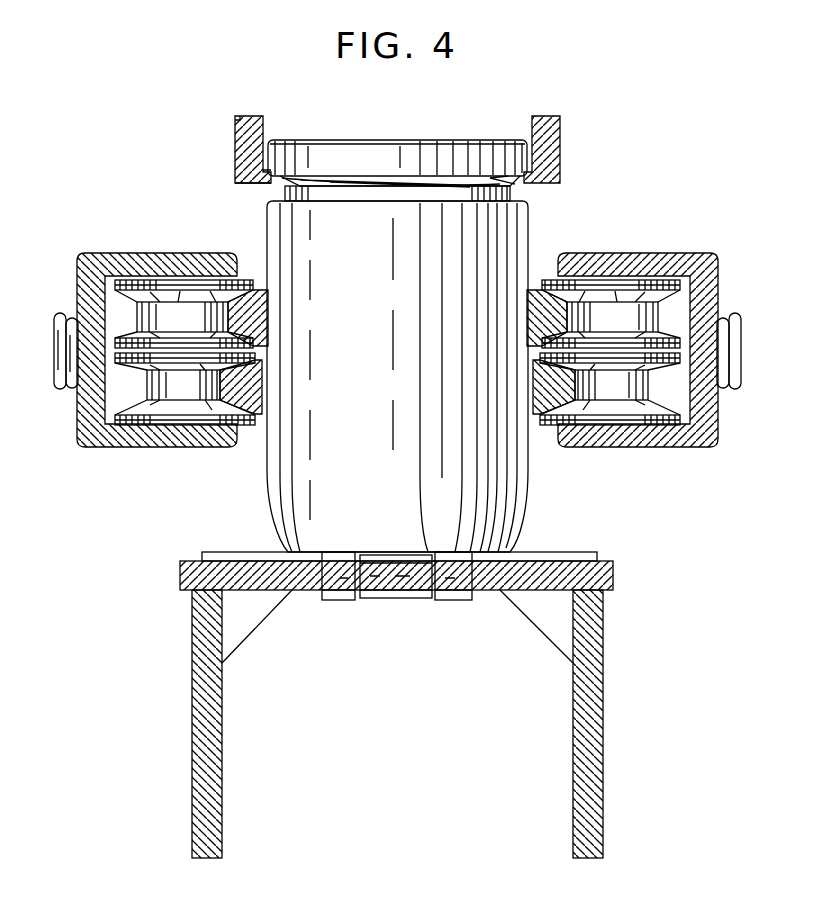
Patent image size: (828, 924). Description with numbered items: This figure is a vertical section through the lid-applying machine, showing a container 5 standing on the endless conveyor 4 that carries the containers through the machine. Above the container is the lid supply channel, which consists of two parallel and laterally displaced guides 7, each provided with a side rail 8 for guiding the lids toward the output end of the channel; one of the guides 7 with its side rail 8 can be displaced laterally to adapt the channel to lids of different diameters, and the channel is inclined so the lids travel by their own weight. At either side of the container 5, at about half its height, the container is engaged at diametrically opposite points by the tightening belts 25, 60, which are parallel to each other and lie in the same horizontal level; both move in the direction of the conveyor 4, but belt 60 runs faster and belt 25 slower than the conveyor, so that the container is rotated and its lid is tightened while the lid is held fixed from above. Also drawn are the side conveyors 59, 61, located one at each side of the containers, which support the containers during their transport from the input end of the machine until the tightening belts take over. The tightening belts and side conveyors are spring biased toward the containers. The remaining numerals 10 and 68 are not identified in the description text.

The endless conveyor 4 is at (565, 557).
The container 5 is at (513, 511).
The guide 7 is at (238, 183).
The side rail 8 is at (238, 150).
The cap 10 is at (410, 149).
The tightening belt 25 is at (260, 416).
The side conveyor 59 is at (262, 283).
The tightening belt 60 is at (535, 420).
The side conveyor 61 is at (546, 285).
The roller housing 68 is at (640, 263).